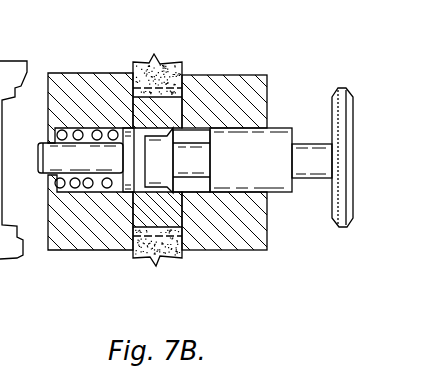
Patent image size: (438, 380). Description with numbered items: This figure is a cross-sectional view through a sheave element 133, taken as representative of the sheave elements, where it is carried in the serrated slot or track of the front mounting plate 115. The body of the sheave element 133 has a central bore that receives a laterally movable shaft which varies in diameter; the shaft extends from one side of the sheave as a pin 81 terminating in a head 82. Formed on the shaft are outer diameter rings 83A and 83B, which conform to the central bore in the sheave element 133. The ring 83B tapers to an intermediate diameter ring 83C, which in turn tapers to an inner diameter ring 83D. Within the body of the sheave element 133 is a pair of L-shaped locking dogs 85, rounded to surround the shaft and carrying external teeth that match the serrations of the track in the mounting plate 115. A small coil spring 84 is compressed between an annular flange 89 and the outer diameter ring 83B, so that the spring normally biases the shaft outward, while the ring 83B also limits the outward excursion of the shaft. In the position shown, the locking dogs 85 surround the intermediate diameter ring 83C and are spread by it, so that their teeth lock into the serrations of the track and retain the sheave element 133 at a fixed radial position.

The pin 81 is at (312, 152).
The head 82 is at (352, 135).
The outer diameter ring 83A is at (280, 177).
The outer diameter ring 83B is at (128, 183).
The intermediate diameter ring 83C is at (155, 172).
The inner diameter ring 83D is at (195, 168).
The coil spring 84 is at (57, 187).
The locking dogs 85 is at (142, 107).
The annular flange 89 is at (53, 140).
The front mounting plate 115 is at (173, 72).
The sheave element 133 is at (258, 77).